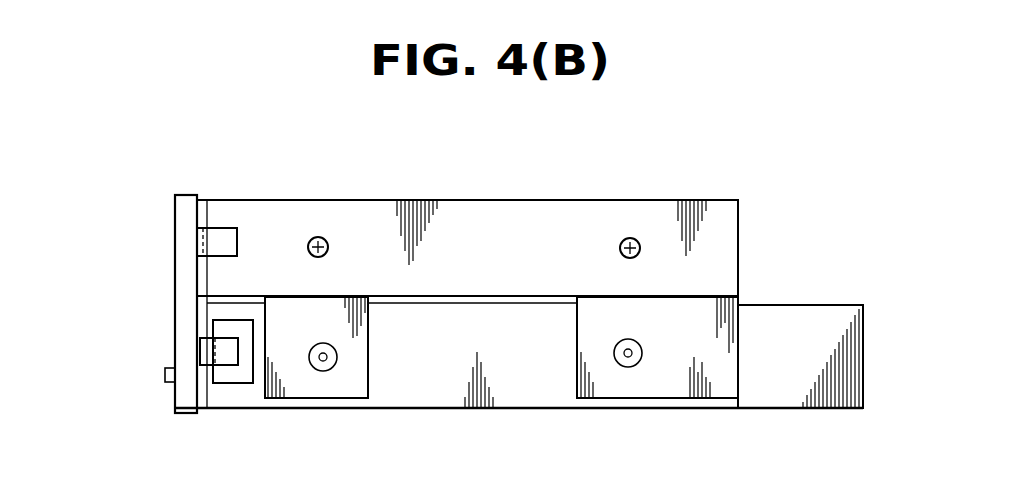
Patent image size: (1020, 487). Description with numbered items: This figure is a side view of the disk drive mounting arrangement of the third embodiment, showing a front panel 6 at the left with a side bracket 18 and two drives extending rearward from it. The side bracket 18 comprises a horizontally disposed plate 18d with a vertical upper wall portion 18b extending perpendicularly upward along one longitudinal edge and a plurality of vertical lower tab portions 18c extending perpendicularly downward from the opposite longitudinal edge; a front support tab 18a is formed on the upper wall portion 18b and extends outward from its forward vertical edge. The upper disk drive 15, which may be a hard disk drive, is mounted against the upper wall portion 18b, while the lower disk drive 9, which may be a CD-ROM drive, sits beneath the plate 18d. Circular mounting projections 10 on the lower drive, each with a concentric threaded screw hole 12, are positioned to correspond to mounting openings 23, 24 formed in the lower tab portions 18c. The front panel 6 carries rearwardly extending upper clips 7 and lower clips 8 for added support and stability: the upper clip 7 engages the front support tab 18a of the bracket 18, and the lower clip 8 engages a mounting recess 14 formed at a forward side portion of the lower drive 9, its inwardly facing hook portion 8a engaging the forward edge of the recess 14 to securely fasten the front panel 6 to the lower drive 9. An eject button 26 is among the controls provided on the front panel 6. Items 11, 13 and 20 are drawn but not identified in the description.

The front panel 6 is at (174, 279).
The upper clip 7 is at (223, 238).
The lower clip 8 is at (231, 360).
The hook portion 8a is at (215, 327).
The lower disk drive 9 is at (816, 304).
The circular mounting projection 10 is at (321, 362).
The pivot shaft 11 is at (637, 362).
The threaded screw hole 12 is at (354, 374).
The bearing 13 is at (618, 362).
The mounting recess 14 is at (248, 370).
The upper disk drive 15 is at (697, 197).
The side bracket 18 is at (743, 240).
The front support tab 18a is at (202, 200).
The upper wall portion 18b is at (457, 228).
The lower tab portion 18c is at (374, 378).
The plate 18d is at (533, 297).
The screw 20 is at (318, 237).
The mounting opening 23 is at (338, 354).
The mounting opening 24 is at (640, 346).
The eject button 26 is at (168, 372).